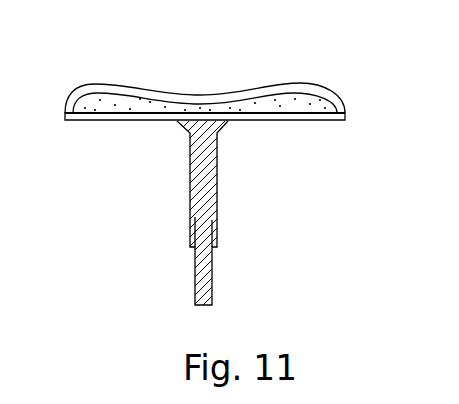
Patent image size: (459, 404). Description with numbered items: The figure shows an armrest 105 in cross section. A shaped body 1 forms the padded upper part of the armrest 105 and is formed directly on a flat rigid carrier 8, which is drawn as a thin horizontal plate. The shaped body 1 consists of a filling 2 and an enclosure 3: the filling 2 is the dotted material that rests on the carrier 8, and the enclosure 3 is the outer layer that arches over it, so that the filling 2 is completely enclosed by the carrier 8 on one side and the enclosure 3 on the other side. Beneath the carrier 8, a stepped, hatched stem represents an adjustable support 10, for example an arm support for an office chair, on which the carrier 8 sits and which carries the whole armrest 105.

The shaped body 1 is at (272, 83).
The filling 2 is at (320, 103).
The enclosure 3 is at (124, 84).
The flat rigid carrier 8 is at (91, 122).
The adjustable support 10 is at (214, 136).
The armrest 105 is at (122, 248).